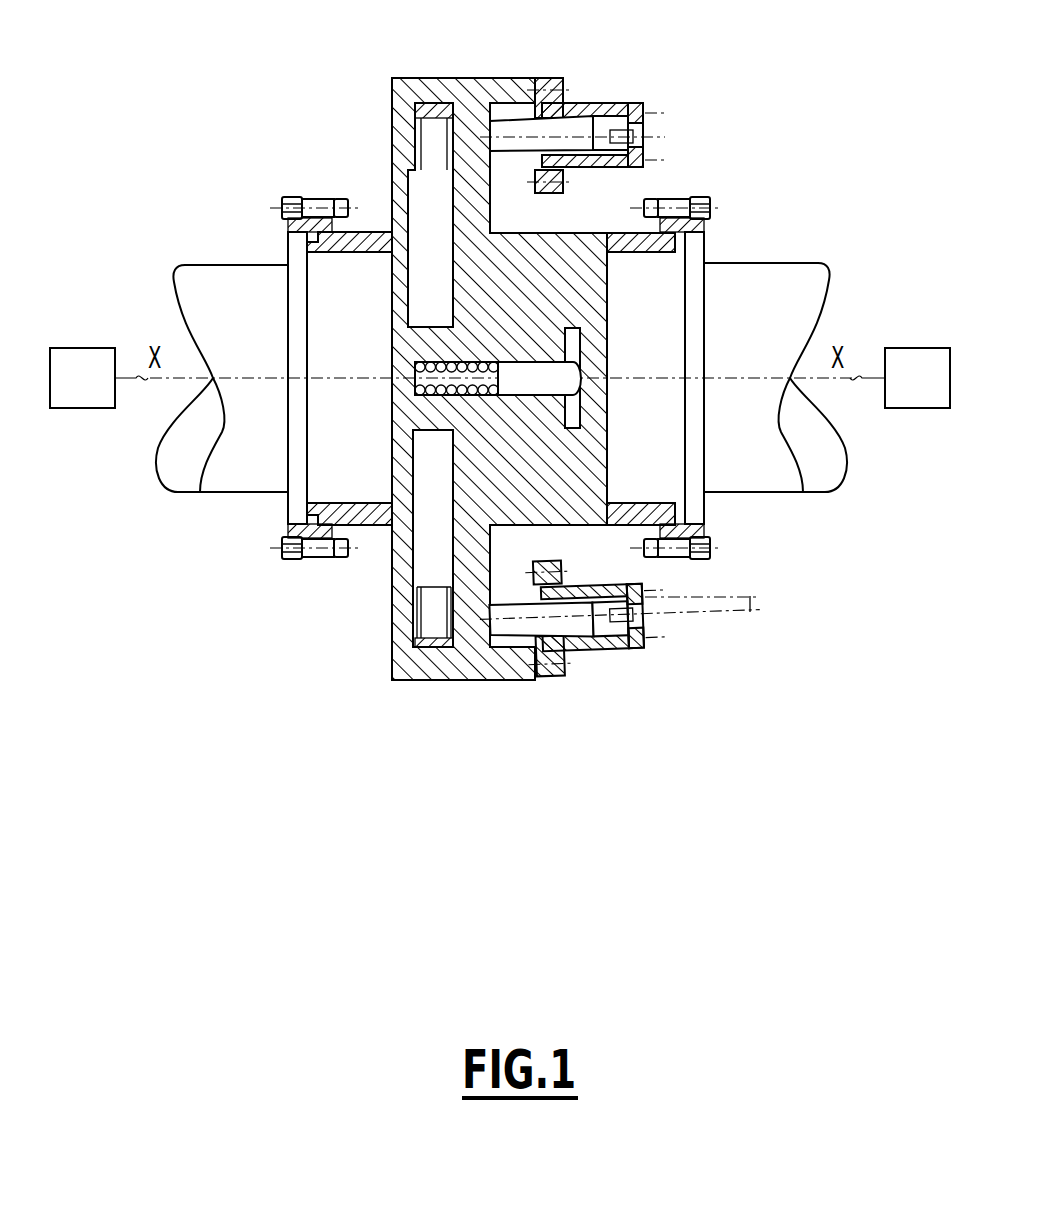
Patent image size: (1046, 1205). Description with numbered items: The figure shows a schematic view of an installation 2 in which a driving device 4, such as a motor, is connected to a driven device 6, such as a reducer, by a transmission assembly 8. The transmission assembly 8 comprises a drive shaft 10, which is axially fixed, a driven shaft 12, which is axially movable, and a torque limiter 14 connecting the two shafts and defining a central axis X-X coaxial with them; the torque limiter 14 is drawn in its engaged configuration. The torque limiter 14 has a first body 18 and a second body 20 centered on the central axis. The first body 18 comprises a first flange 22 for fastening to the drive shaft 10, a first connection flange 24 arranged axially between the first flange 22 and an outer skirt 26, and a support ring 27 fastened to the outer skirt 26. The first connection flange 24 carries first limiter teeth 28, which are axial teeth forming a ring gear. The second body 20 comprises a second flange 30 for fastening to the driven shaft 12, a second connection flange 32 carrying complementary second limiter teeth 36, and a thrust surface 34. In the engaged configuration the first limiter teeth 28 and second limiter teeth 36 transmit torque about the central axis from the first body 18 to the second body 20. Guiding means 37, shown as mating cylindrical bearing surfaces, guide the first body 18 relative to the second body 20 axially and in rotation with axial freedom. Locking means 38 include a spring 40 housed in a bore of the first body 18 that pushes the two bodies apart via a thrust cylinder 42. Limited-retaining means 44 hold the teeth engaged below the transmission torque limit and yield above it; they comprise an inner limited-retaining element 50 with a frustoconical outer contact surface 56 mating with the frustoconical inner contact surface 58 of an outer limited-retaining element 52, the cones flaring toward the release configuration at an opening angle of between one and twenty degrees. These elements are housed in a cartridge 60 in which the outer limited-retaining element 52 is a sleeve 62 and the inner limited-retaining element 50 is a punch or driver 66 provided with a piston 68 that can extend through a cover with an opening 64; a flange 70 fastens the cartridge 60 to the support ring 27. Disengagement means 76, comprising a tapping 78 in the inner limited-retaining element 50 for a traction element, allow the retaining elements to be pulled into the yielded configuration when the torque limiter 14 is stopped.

The installation 2 is at (415, 344).
The driving device 4 is at (87, 409).
The driven device 6 is at (920, 409).
The transmission assembly 8 is at (280, 653).
The drive shaft 10 is at (237, 478).
The driven shaft 12 is at (770, 478).
The torque limiter 14 is at (366, 636).
The first body 18 is at (388, 203).
The second body 20 is at (612, 222).
The first flange 22 is at (357, 252).
The first connection flange 24 is at (489, 344).
The outer skirt 26 is at (495, 90).
The support ring 27 is at (543, 93).
The first limiter teeth 28 is at (388, 126).
The second flange 30 is at (643, 517).
The second connection flange 32 is at (470, 196).
The thrust surface 34 is at (492, 617).
The second limiter teeth 36 is at (446, 112).
The guiding means 37 is at (497, 432).
The locking means 38 is at (450, 379).
The spring 40 is at (432, 394).
The thrust cylinder 42 is at (548, 372).
The limited-retaining means 44 is at (626, 658).
The inner limited-retaining element 50 is at (570, 618).
The outer limited-retaining element 52 is at (598, 651).
The outer contact surface 56 is at (572, 600).
The inner contact surface 58 is at (550, 602).
The cartridge 60 is at (616, 113).
The sleeve 62 is at (580, 168).
The cover with an opening 64 is at (645, 118).
The punch or driver 66 is at (580, 126).
The piston 68 is at (600, 128).
The flange 70 is at (552, 668).
The disengagement means 76 is at (673, 121).
The tapping 78 is at (648, 146).